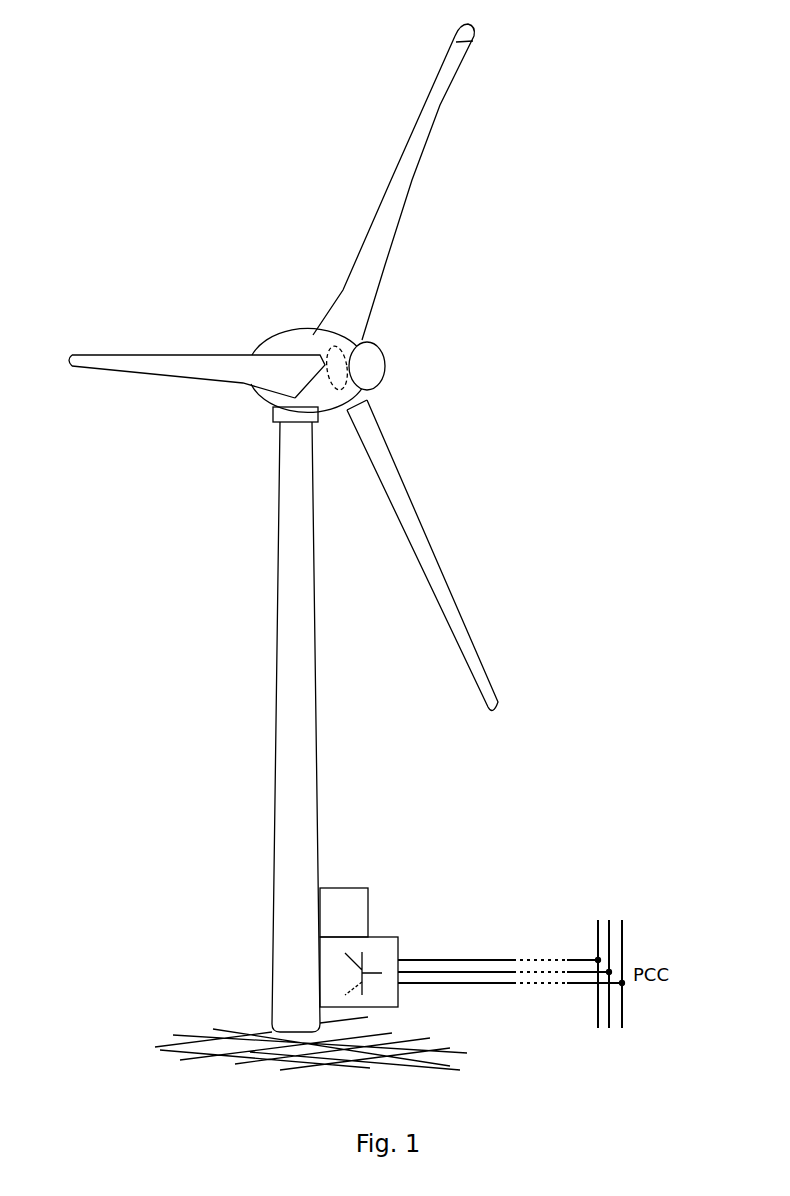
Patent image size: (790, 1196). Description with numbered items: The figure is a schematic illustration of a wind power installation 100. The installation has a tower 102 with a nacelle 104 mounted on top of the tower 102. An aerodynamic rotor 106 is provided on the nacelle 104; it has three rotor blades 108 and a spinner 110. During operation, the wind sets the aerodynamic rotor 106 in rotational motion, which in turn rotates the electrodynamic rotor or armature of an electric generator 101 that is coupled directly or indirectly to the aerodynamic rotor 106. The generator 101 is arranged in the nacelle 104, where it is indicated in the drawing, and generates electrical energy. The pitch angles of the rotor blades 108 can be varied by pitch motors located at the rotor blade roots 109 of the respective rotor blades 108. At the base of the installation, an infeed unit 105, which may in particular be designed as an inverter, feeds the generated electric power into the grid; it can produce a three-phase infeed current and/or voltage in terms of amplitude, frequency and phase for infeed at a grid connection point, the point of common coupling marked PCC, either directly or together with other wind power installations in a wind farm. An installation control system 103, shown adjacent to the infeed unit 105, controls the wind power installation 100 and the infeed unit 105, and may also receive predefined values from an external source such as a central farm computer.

The wind power installation 100 is at (235, 487).
The electric generator 101 is at (342, 337).
The tower 102 is at (303, 727).
The installation control system 103 is at (365, 910).
The nacelle 104 is at (292, 347).
The infeed unit 105 is at (398, 993).
The aerodynamic rotor 106 is at (450, 294).
The rotor blades 108 is at (420, 147).
The rotor blade roots 109 is at (373, 402).
The spinner 110 is at (372, 365).